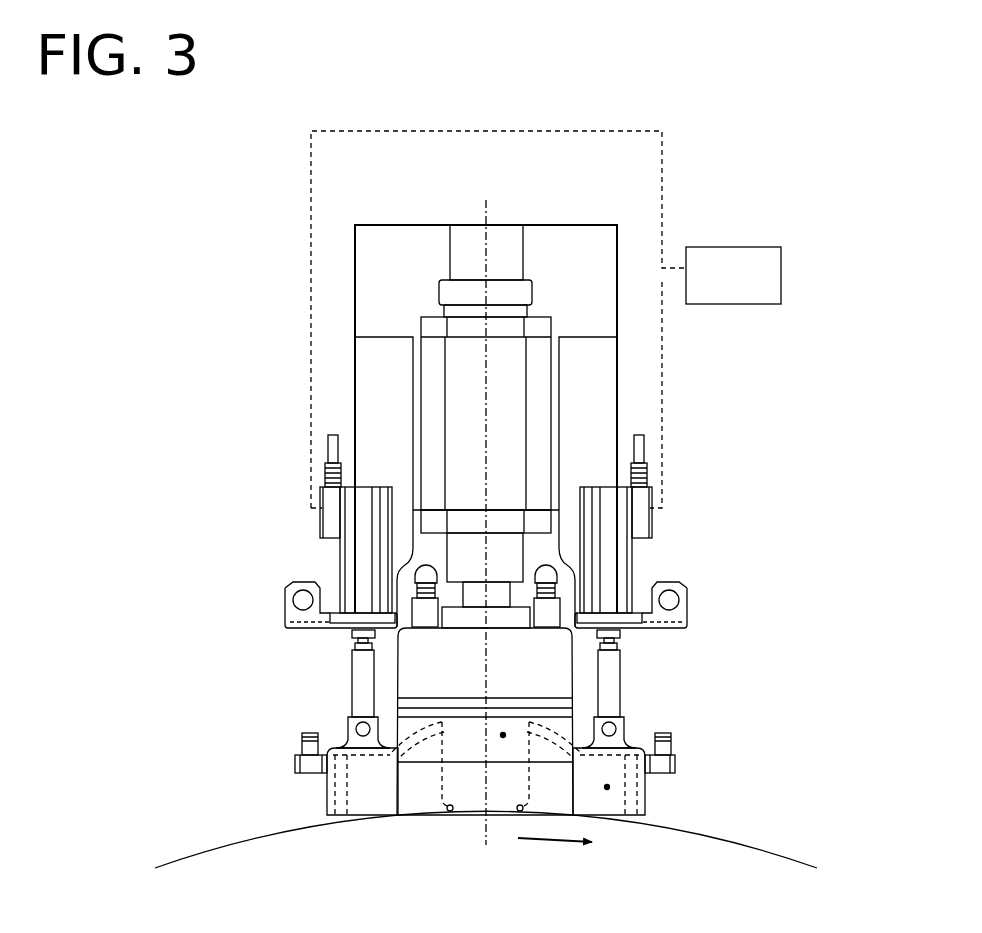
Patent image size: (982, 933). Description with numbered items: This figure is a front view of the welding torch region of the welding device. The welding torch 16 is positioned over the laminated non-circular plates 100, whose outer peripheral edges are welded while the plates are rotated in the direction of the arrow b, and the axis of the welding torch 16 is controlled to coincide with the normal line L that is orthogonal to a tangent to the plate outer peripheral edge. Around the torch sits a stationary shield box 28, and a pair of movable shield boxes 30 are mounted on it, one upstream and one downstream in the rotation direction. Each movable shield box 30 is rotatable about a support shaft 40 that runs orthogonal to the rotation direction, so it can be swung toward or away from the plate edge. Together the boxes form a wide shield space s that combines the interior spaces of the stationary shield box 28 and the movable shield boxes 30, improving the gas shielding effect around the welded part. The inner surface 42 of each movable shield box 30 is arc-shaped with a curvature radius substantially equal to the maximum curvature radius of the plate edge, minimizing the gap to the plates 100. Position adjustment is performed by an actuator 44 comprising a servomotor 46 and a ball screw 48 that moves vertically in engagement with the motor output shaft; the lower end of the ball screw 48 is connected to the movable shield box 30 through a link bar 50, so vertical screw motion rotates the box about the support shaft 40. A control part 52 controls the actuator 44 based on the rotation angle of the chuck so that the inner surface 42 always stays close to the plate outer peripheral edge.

The welding torch 16 is at (420, 415).
The stationary shield box 28 is at (398, 663).
The movable shield box 30 is at (327, 795).
The support shaft 40 is at (520, 820).
The inner surface 42 is at (363, 827).
The actuator 44 is at (303, 541).
The servomotor 46 is at (335, 515).
The ball screw 48 is at (360, 553).
The link bar 50 is at (352, 690).
The control part 52 is at (740, 247).
The non-circular plate 100 is at (197, 850).
The normal line L is at (486, 214).
The shield space s is at (503, 735).
The arrow indicating rotation direction b is at (545, 842).